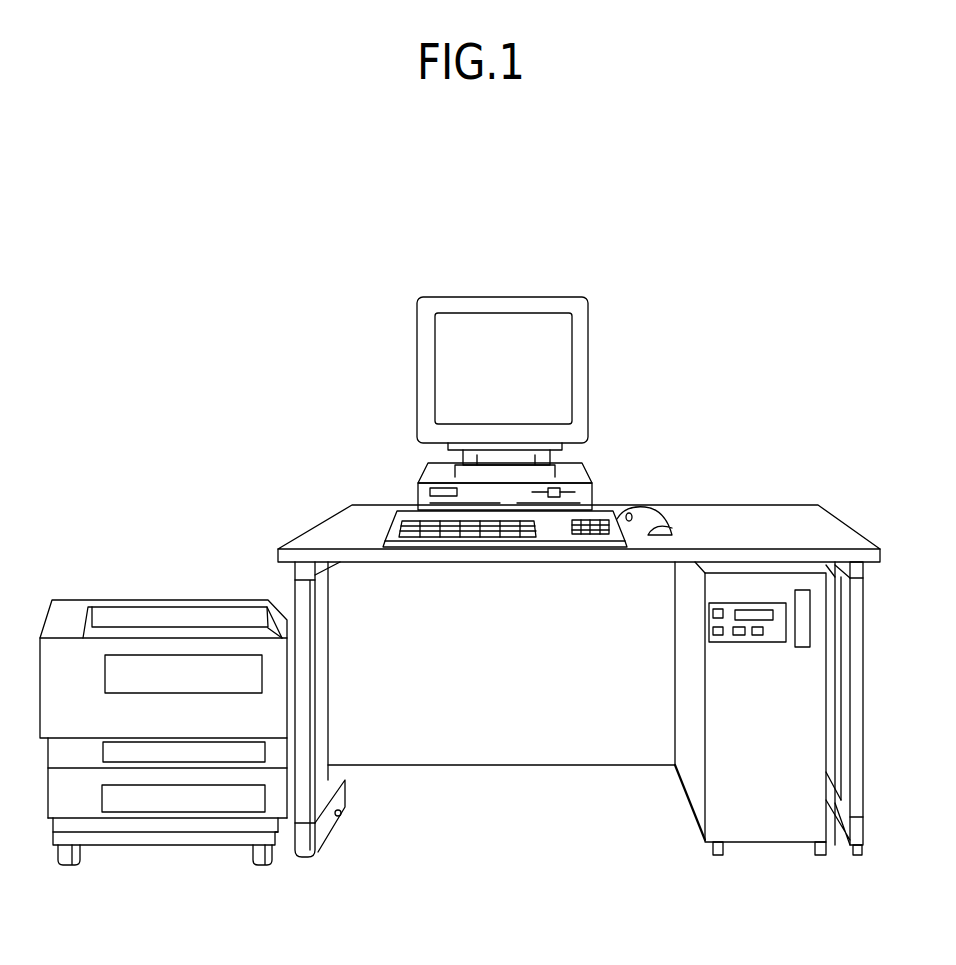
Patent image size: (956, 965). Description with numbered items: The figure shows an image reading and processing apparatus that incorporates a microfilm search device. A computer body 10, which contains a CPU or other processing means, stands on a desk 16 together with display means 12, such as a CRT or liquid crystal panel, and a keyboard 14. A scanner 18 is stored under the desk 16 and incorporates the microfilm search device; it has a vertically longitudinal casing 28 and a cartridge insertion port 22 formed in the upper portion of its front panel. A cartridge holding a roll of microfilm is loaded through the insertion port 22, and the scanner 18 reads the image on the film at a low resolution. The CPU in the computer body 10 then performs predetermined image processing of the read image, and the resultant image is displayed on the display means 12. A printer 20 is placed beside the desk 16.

The computer body 10 is at (592, 470).
The display means 12 is at (590, 348).
The keyboard 14 is at (392, 528).
The desk 16 is at (764, 504).
The scanner 18 is at (706, 751).
The printer 20 is at (151, 599).
The cartridge insertion port 22 is at (803, 647).
The casing 28 is at (697, 800).